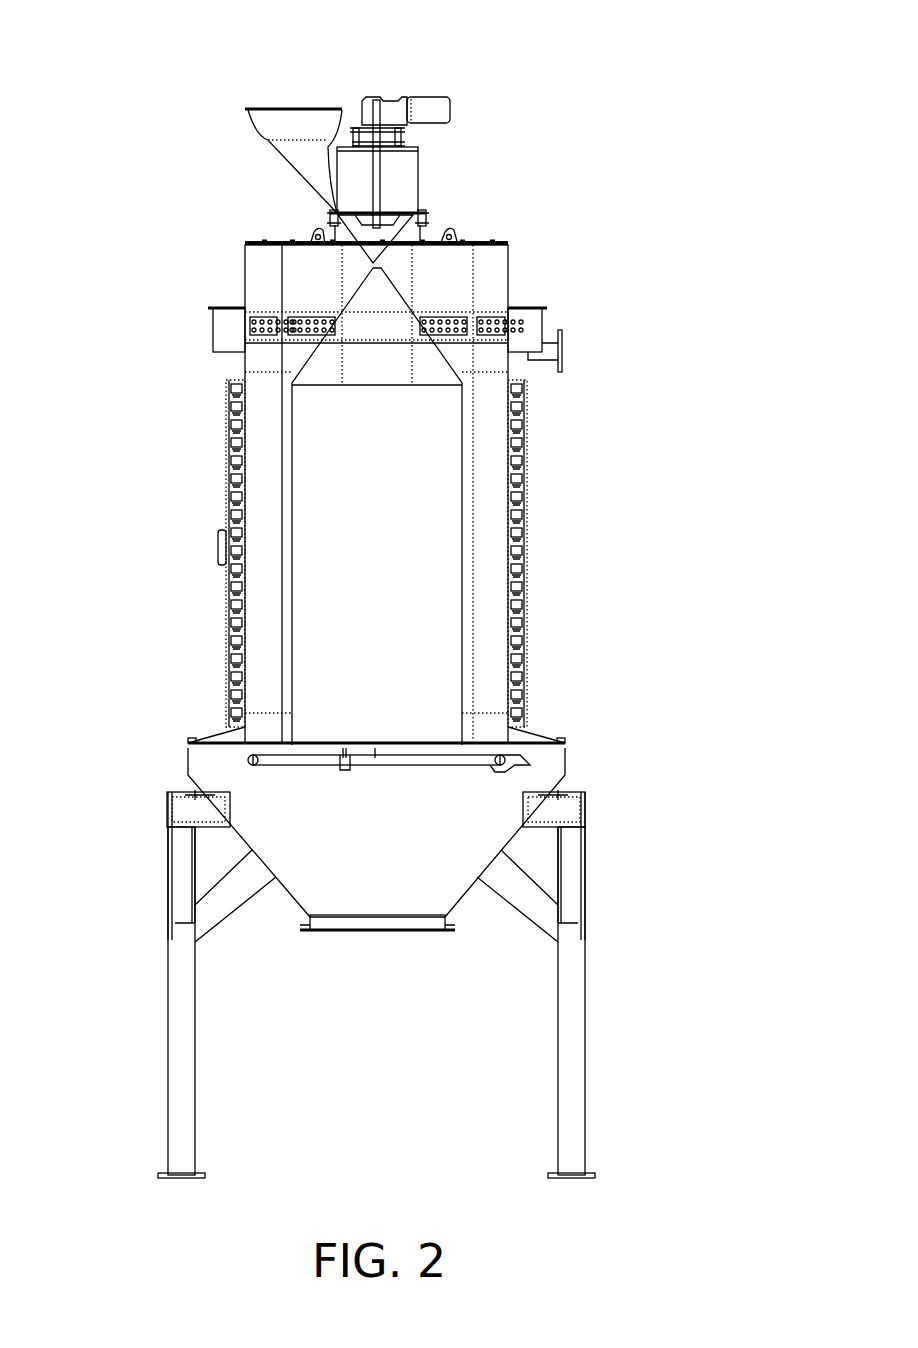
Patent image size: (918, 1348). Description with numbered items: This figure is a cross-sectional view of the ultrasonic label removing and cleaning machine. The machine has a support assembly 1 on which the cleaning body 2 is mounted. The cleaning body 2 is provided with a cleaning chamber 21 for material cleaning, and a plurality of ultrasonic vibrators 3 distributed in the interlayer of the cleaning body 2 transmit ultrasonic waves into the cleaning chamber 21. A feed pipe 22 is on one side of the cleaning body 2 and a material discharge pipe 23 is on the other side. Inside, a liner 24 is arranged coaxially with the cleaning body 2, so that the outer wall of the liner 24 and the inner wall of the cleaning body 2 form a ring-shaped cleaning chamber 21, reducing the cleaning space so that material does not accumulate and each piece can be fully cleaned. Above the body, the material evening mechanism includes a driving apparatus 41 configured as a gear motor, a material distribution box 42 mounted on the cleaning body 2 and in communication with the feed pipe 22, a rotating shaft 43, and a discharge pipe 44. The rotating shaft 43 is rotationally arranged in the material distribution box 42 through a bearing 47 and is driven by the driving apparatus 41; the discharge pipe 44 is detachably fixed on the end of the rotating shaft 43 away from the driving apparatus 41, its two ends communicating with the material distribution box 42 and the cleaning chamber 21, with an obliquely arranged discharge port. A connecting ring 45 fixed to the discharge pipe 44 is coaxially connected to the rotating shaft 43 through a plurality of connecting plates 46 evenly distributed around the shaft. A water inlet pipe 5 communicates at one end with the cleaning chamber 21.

The support assembly 1 is at (176, 993).
The cleaning body 2 is at (212, 474).
The cleaning chamber 21 is at (258, 579).
The feed pipe 22 is at (278, 123).
The material discharge pipe 23 is at (402, 903).
The liner 24 is at (427, 512).
The ultrasonic vibrators 3 is at (527, 600).
The driving apparatus 41 is at (432, 103).
The material distribution box 42 is at (418, 161).
The rotating shaft 43 is at (378, 204).
The discharge pipe 44 is at (382, 240).
The connecting ring 45 is at (333, 222).
The connecting plates 46 is at (337, 215).
The bearing 47 is at (363, 127).
The water inlet pipe 5 is at (503, 758).